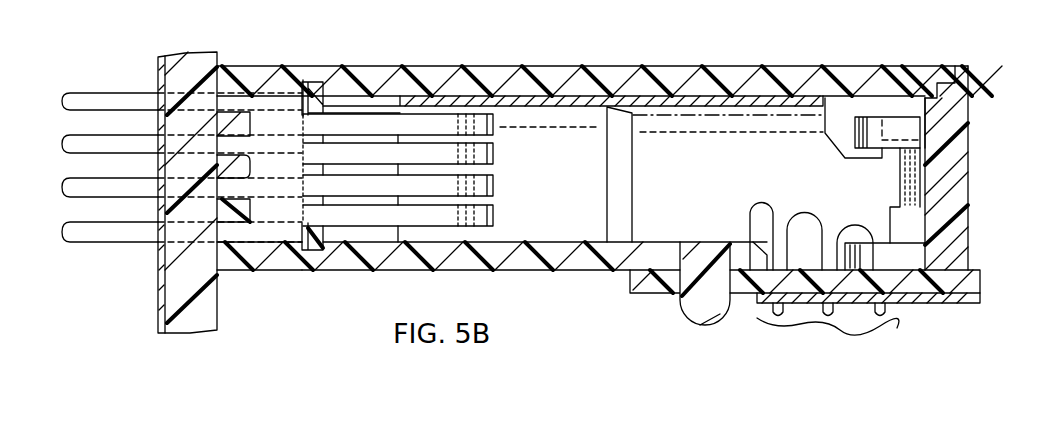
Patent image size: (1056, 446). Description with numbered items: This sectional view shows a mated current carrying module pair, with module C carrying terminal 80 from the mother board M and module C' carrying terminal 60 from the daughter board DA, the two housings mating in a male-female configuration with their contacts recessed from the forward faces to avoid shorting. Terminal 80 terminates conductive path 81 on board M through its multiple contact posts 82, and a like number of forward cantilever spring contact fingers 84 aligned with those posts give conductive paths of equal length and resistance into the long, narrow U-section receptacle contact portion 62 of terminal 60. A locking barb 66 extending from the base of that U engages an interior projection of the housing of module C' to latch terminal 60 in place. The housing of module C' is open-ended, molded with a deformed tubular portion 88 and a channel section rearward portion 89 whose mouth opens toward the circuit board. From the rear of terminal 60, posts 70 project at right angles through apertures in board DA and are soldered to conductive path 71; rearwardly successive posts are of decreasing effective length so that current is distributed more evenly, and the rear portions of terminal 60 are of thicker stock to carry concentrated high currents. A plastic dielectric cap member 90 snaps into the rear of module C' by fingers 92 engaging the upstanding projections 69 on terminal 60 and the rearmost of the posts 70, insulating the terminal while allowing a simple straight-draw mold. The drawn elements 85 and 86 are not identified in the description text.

The contact posts 82 is at (100, 143).
The conductive path 81 is at (158, 62).
The mother board M is at (177, 292).
The front plate 85 is at (300, 96).
The terminal 80 is at (292, 238).
The cantilever spring contact fingers 84 is at (370, 213).
The socket contacts 86 is at (470, 125).
The U-section receptacle contact portion 62 is at (400, 100).
The module C is at (592, 59).
The deformed tubular portion 88 is at (593, 90).
The locking barb 66 is at (675, 97).
The terminal 60 is at (708, 118).
The channel section rearward portion 89 is at (820, 73).
The module C' is at (926, 60).
The fingers 92 is at (907, 128).
The upstanding projections 69 is at (892, 156).
The plastic dielectric cap member 90 is at (963, 153).
The daughter board DA is at (977, 274).
The conductive path 71 is at (950, 307).
The posts 70 is at (844, 324).